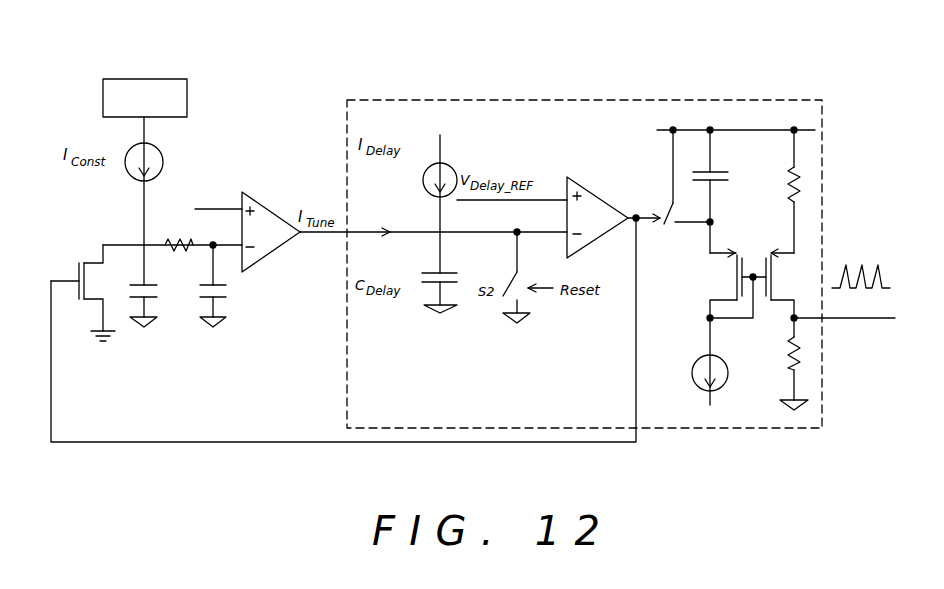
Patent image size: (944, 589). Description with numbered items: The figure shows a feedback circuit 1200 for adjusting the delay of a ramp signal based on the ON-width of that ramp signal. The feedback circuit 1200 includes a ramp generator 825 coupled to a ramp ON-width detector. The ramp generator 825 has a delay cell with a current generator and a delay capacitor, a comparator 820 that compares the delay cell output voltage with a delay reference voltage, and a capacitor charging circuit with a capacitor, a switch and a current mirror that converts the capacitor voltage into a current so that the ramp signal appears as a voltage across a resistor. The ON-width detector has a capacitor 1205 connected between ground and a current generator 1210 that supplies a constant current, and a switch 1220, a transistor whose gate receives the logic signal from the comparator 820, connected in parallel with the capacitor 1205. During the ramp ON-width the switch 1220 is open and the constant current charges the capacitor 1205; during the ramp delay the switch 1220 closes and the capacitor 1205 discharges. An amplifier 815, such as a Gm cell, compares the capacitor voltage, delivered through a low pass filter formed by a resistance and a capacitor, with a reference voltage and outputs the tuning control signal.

The feedback circuit 1200 is at (432, 44).
The capacitor 1205 is at (187, 317).
The current generator 1210 is at (122, 78).
The switch 1220 is at (75, 268).
The amplifier 815 is at (275, 206).
The comparator 820 is at (601, 190).
The ramp generator 825 is at (823, 181).